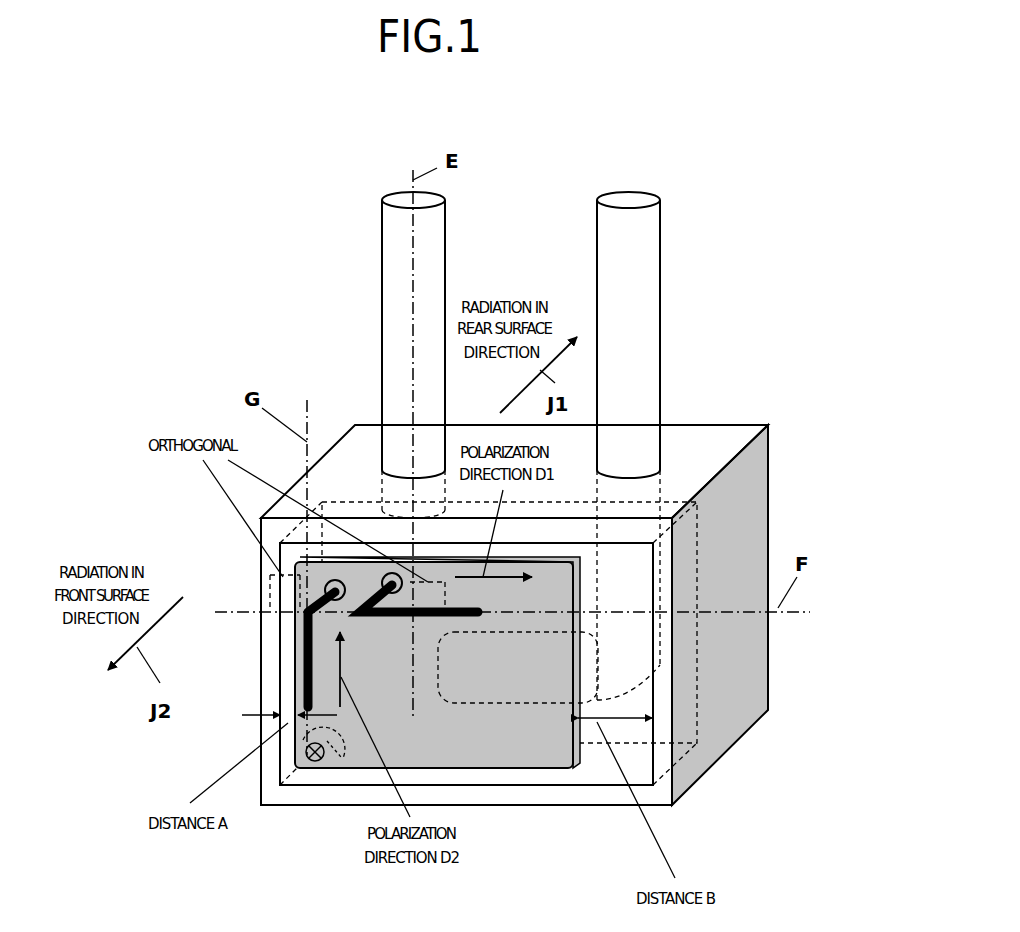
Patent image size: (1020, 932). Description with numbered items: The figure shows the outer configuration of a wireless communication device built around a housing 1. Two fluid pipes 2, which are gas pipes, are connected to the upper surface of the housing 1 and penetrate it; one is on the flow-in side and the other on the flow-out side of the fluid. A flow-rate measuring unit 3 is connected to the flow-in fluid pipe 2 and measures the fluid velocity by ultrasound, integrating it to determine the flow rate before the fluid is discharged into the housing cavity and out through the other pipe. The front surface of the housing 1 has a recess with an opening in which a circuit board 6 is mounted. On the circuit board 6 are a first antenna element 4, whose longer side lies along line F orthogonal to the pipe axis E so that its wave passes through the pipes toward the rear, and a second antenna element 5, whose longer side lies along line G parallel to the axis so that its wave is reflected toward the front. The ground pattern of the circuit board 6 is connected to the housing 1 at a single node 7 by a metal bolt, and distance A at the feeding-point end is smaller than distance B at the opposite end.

The housing 1 is at (723, 443).
The fluid pipes 2 is at (395, 260).
The flow-rate measuring unit 3 is at (592, 680).
The first antenna element 4 is at (383, 614).
The second antenna element 5 is at (302, 683).
The circuit board 6 is at (507, 757).
The node 7 is at (310, 762).